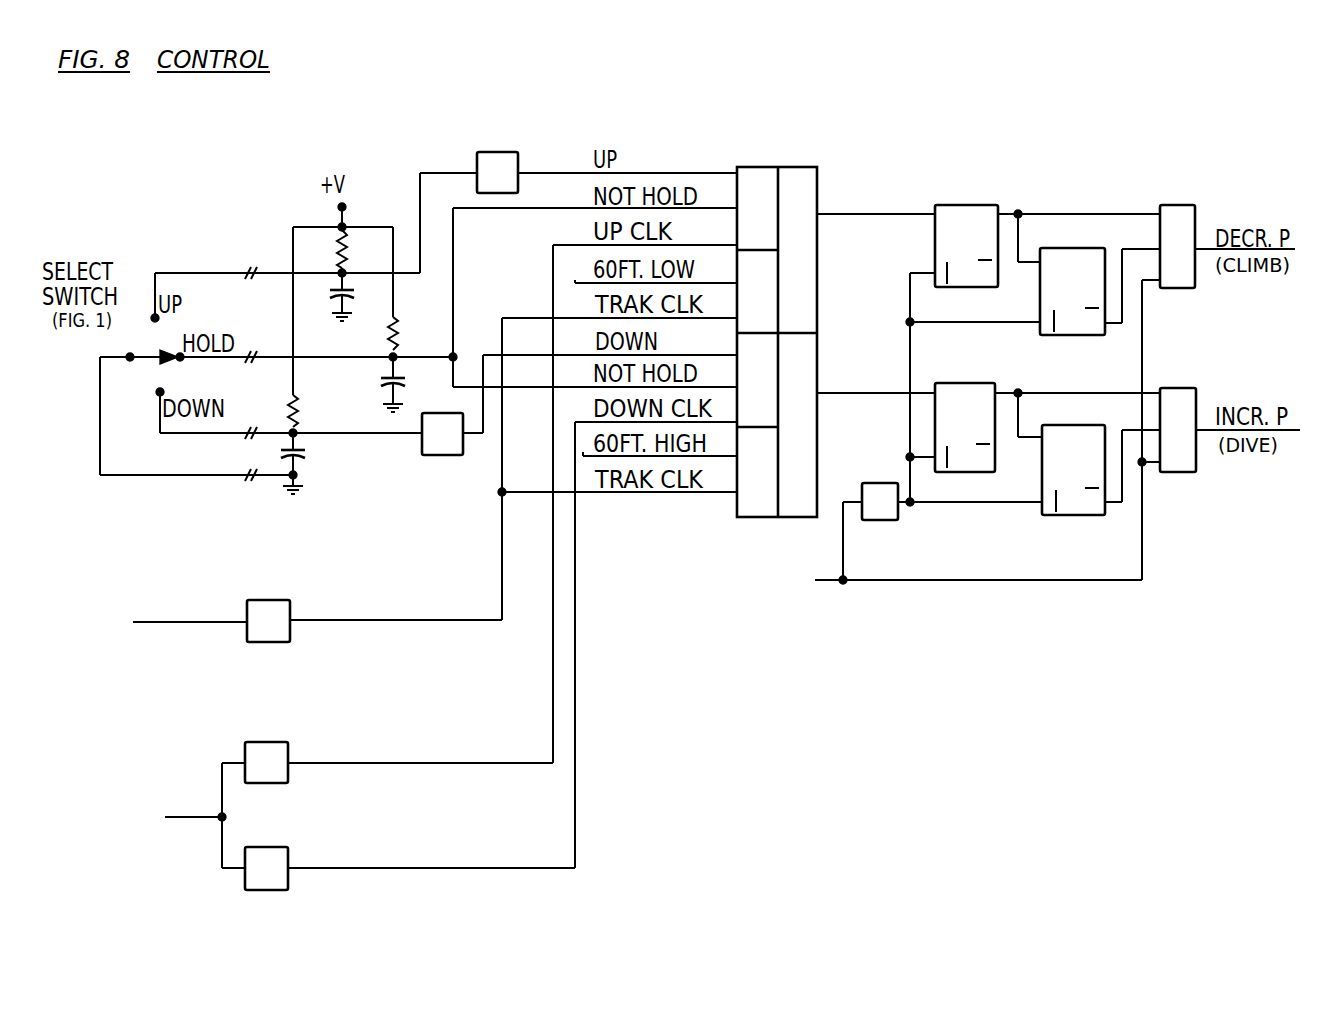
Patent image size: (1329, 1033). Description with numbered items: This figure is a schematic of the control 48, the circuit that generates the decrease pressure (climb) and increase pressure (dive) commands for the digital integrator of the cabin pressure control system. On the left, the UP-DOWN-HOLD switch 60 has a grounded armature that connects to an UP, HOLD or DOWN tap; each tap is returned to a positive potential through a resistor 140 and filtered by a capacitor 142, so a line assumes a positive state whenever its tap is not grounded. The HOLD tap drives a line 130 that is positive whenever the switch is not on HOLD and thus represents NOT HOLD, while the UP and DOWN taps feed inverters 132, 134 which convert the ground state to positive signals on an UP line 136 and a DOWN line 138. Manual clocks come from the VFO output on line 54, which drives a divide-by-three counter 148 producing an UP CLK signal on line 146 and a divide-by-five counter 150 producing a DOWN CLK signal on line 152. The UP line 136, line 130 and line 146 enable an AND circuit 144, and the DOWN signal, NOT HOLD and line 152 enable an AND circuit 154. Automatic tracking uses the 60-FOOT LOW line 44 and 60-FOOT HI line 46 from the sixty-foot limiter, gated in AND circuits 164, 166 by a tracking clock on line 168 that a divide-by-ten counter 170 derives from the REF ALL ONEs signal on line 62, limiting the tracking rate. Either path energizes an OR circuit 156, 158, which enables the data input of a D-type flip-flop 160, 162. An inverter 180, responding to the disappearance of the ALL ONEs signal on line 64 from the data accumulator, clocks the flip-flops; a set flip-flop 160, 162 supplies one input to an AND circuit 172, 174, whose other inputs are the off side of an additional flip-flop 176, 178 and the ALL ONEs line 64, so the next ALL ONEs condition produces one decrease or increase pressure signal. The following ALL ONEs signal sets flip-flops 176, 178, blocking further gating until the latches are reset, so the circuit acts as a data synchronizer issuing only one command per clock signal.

The control 48 is at (303, 150).
The UP-DOWN-HOLD switch 60 is at (155, 345).
The resistor 140 is at (347, 248).
The capacitor 142 is at (336, 294).
The line 130 is at (452, 360).
The inverter 132 is at (477, 165).
The inverter 134 is at (438, 457).
The UP line 136 is at (577, 140).
The DOWN line 138 is at (478, 435).
The AND circuit 144 is at (802, 336).
The UP CLK line 146 is at (553, 258).
The 60-FOOT LOW line 44 is at (578, 284).
The 60-FOOT HI line 46 is at (586, 460).
The DOWN CLK line 152 is at (577, 652).
The AND circuit 154 is at (768, 357).
The OR circuit 156 is at (804, 186).
The OR circuit 158 is at (806, 474).
The AND circuit 164 is at (765, 316).
The AND circuit 166 is at (752, 505).
The D-type flip-flop 160 is at (965, 212).
The D-type flip-flop 162 is at (963, 388).
The flip-flop 176 is at (1062, 252).
The flip-flop 178 is at (1072, 516).
The AND circuit 172 is at (1181, 186).
The AND circuit 174 is at (1197, 366).
The inverter 180 is at (897, 515).
The ALL ONEs line 64 is at (826, 592).
The REF ALL ONEs line 62 is at (208, 620).
The divide-by-ten counter 170 is at (287, 602).
The tracking clock line 168 is at (408, 602).
The line 54 is at (206, 792).
The divide-by-three counter 148 is at (288, 746).
The divide-by-five counter 150 is at (288, 851).